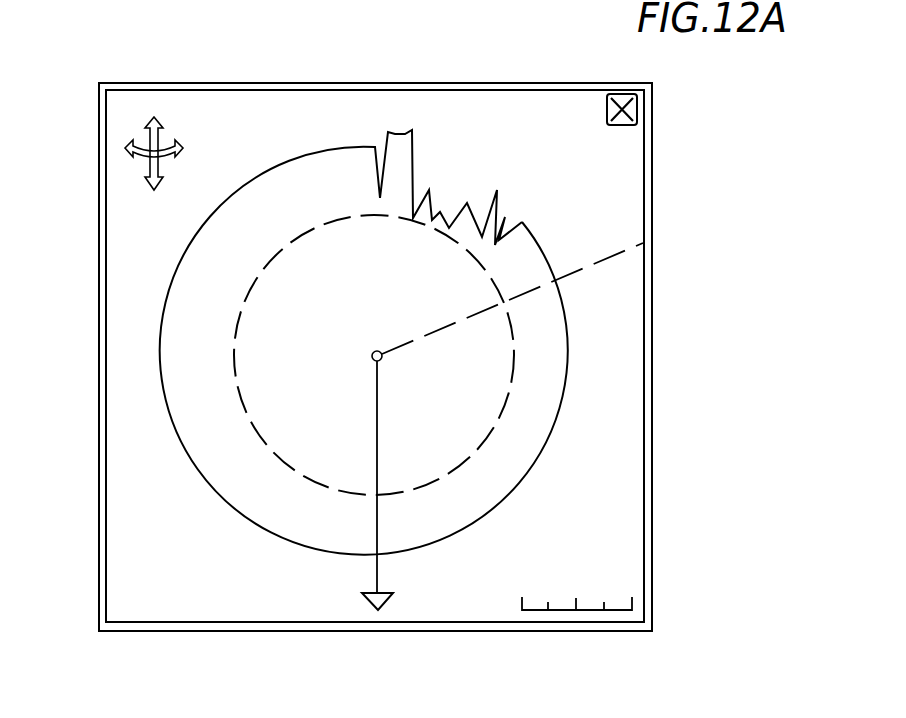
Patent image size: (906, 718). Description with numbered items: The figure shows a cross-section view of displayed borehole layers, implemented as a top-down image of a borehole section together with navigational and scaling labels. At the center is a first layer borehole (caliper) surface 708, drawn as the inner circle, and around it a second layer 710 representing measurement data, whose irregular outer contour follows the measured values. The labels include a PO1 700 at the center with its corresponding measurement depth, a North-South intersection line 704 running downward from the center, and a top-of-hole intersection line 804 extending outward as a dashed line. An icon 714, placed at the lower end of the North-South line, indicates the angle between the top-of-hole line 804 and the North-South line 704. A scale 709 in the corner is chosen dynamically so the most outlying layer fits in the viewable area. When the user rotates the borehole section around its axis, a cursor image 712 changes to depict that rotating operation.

The PO1 700 is at (381, 359).
The North-South intersection line 704 is at (377, 566).
The first layer borehole (caliper) surface 708 is at (235, 335).
The scale 709 is at (617, 611).
The second layer 710 is at (177, 430).
The cursor image 712 is at (150, 133).
The icon 714 is at (382, 612).
The top-of-hole (TOH) intersection line 804 is at (598, 263).